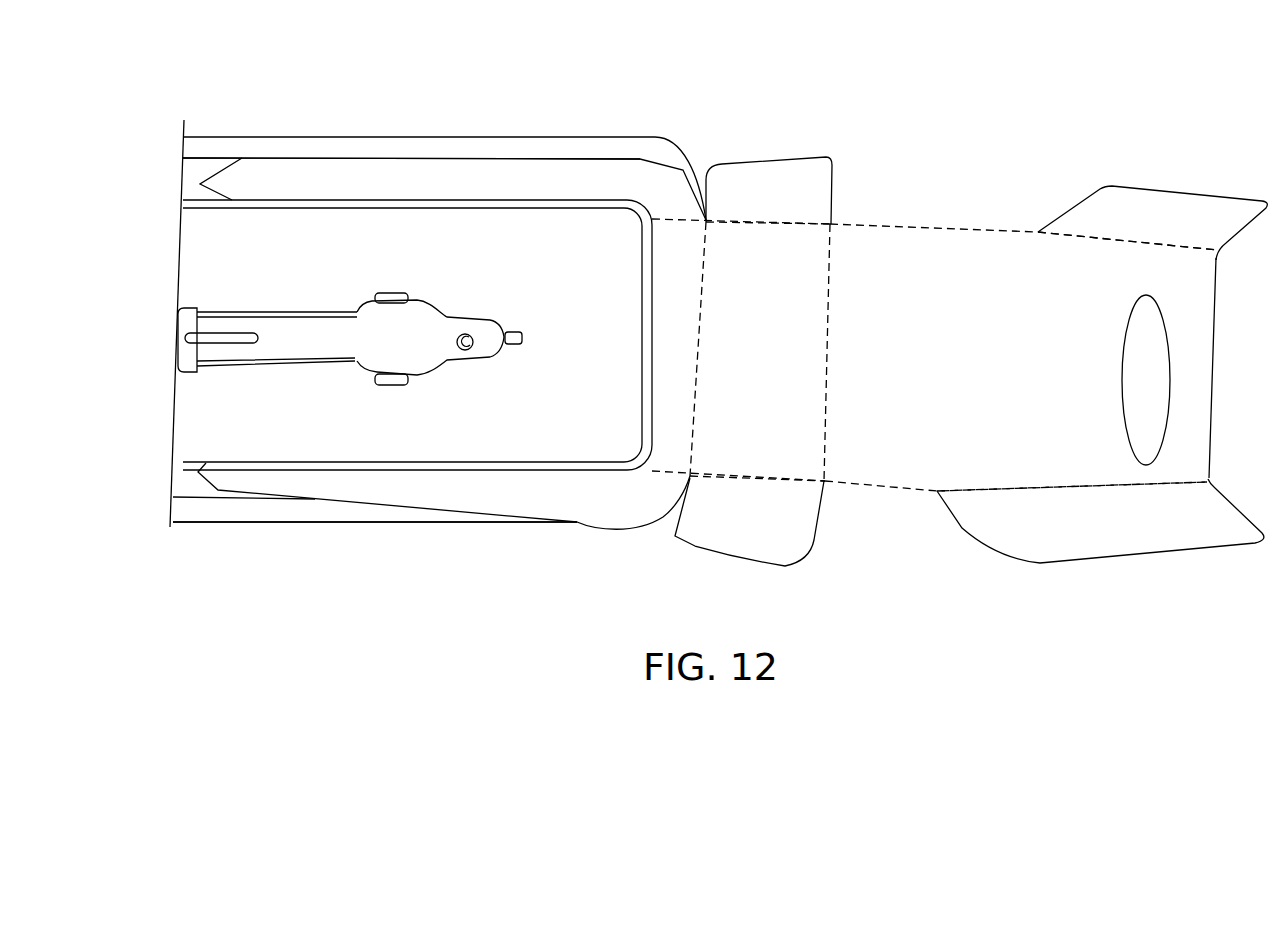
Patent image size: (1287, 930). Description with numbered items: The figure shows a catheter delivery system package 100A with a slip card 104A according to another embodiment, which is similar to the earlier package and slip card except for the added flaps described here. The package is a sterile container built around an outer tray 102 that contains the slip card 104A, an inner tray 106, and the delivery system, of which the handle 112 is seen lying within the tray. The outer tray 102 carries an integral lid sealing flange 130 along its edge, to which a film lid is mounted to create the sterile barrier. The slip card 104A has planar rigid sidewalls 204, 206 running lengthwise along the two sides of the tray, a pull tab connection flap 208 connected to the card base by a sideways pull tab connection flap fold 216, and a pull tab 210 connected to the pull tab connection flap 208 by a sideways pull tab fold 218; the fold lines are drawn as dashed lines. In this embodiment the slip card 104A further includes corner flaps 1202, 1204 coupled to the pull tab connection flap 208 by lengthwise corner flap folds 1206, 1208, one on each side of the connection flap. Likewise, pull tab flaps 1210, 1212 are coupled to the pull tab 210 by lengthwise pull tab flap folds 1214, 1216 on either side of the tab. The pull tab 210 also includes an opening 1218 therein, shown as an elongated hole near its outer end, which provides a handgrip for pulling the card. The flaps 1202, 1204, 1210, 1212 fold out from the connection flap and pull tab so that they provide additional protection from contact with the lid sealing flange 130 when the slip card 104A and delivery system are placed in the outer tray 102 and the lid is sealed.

The catheter delivery system package 100A is at (548, 564).
The outer tray 102 is at (283, 135).
The slip card 104A is at (915, 226).
The inner tray 106 is at (549, 195).
The handle 112 is at (282, 320).
The lid sealing flange 130 is at (252, 507).
The sidewall 204 is at (591, 508).
The sidewall 206 is at (503, 192).
The pull tab connection flap 208 is at (774, 355).
The pull tab 210 is at (993, 365).
The pull tab connection flap fold 216 is at (695, 410).
The pull tab fold 218 is at (827, 387).
The corner flap 1202 is at (783, 531).
The corner flap 1204 is at (806, 206).
The corner flap fold 1206 is at (763, 478).
The corner flap fold 1208 is at (766, 226).
The pull tab flap 1210 is at (1144, 541).
The pull tab flap 1212 is at (1199, 235).
The pull tab flap fold 1214 is at (1070, 486).
The pull tab flap fold 1216 is at (1100, 240).
The opening 1218 is at (1128, 362).